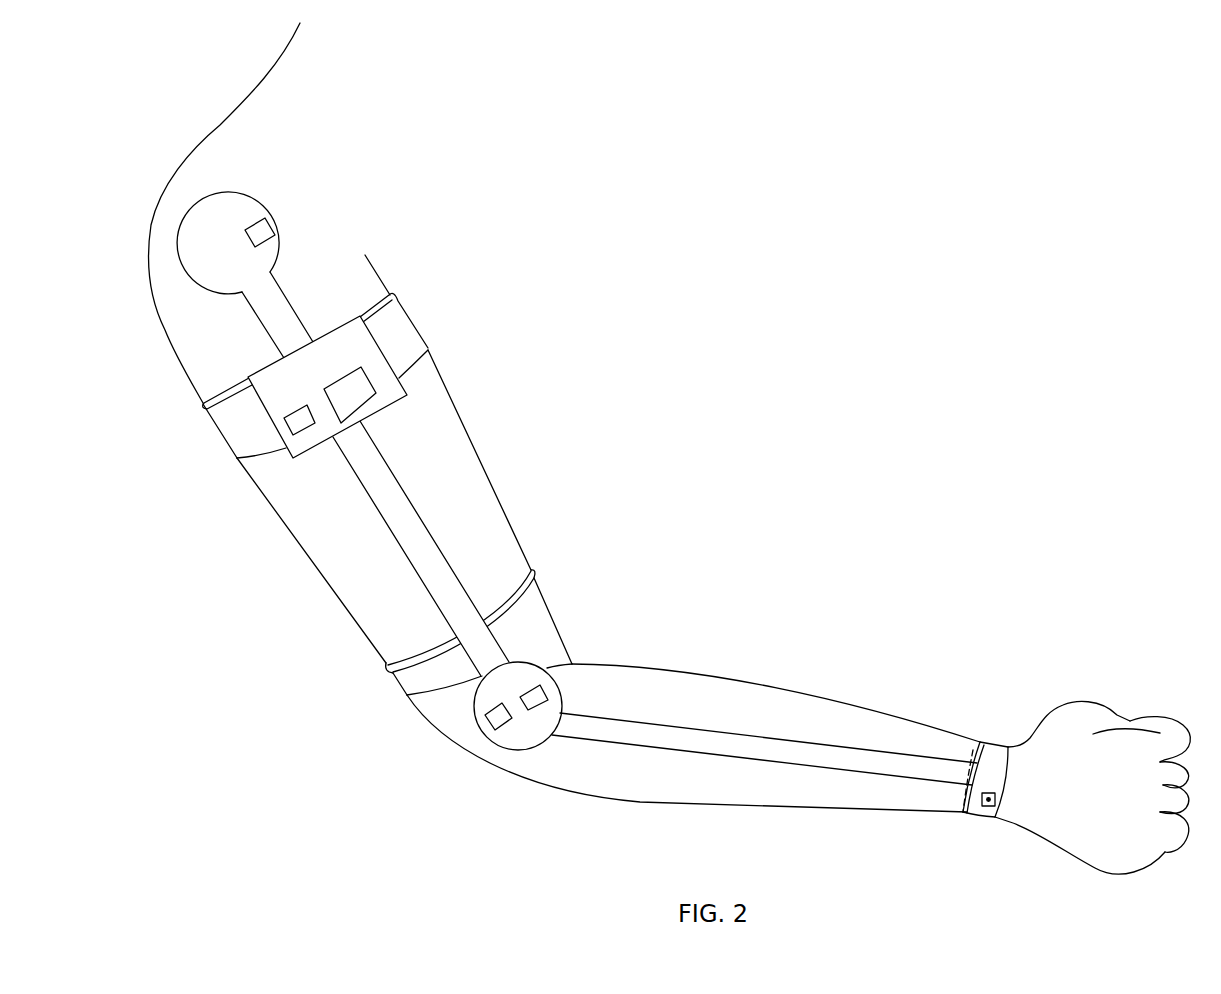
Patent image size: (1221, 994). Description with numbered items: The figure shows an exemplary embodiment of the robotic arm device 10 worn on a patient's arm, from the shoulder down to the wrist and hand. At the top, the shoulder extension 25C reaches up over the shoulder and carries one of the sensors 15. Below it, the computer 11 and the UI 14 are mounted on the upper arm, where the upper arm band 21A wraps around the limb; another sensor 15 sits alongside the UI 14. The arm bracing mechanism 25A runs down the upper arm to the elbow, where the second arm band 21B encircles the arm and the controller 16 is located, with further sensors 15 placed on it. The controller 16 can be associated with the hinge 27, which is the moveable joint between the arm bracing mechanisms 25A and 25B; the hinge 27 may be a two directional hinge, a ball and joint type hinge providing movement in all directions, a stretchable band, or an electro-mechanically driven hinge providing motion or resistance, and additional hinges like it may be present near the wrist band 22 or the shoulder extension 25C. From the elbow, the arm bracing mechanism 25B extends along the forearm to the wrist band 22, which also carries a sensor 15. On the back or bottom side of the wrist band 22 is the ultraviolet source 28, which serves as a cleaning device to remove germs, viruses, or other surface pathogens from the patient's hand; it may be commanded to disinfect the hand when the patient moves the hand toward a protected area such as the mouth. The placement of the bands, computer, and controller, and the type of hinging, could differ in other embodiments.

The robotic arm device 10 is at (828, 235).
The computer 11 is at (350, 337).
The UI 14 is at (361, 396).
The sensors 15 is at (266, 228).
The controller 16 is at (529, 686).
The arm band 21A is at (404, 332).
The arm band 21B is at (531, 603).
The wrist band 22 is at (998, 747).
The arm bracing mechanism 25A is at (420, 521).
The arm bracing mechanism 25B is at (755, 739).
The shoulder extension 25C is at (287, 297).
The hinge 27 is at (566, 663).
The ultraviolet (UV) source 28 is at (960, 795).